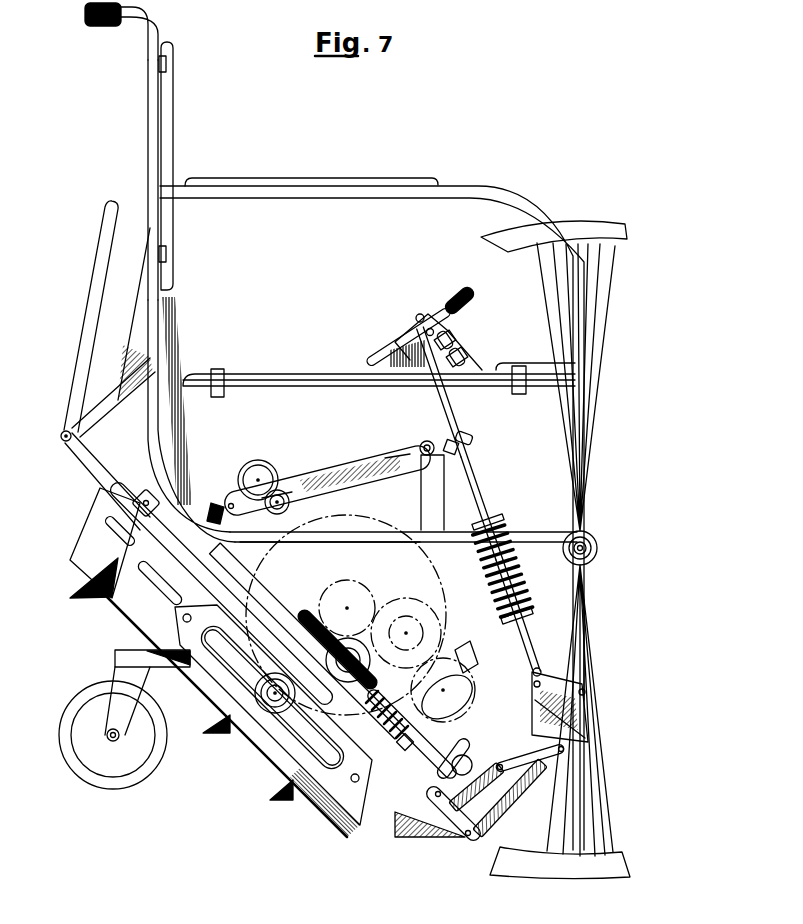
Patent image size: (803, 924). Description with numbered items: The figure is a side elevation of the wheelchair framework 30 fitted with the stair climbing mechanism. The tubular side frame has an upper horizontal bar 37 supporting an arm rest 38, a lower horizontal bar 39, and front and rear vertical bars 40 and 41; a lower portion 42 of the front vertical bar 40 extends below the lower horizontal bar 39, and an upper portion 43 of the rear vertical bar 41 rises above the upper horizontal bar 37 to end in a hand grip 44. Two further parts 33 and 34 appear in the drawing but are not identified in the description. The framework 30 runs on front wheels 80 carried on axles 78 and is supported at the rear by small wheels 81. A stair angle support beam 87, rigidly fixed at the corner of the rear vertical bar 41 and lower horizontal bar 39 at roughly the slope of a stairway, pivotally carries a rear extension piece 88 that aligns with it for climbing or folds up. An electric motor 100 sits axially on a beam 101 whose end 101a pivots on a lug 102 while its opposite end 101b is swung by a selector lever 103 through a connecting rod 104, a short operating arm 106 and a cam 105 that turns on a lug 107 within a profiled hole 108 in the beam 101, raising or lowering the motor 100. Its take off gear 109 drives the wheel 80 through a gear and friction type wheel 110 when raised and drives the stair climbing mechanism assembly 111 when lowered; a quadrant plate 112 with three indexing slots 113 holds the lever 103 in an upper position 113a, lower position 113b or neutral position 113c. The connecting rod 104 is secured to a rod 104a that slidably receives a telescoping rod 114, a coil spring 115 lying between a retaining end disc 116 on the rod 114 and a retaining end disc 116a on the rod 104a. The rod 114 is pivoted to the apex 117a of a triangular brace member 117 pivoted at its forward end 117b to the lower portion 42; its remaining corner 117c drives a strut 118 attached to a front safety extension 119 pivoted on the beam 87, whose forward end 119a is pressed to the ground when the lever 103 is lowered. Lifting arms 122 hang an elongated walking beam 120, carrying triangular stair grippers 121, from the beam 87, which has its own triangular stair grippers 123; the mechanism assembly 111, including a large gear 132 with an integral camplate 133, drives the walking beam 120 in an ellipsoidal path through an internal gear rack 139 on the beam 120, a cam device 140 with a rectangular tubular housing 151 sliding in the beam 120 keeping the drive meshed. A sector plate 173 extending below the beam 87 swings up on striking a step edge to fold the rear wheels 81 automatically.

The framework 30 is at (293, 156).
The armrest bar 33 is at (538, 368).
The backrest tube 34 is at (167, 145).
The upper horizontal bar 37 is at (460, 192).
The arm rest 38 is at (299, 181).
The lower horizontal bar 39 is at (327, 543).
The front vertical bar 40 is at (585, 451).
The rear vertical bar 41 is at (158, 191).
The lower portion 42 is at (588, 657).
The upper portion 43 is at (143, 15).
The hand grip 44 is at (106, 28).
The axle 78 is at (566, 552).
The front wheel 80 is at (570, 226).
The small wheel 81 is at (164, 747).
The stair angle support beam 87 is at (80, 447).
The rear extension piece 88 is at (106, 227).
The electric motor 100 is at (352, 458).
The beam 101 is at (258, 478).
The end of beam 101a is at (232, 503).
The opposite end of beam 101b is at (398, 456).
The lug 102 is at (213, 503).
The selector lever 103 is at (436, 310).
The connecting rod 104 is at (447, 410).
The rod 104a is at (485, 491).
The cam 105 is at (450, 447).
The short operating arm 106 is at (464, 441).
The lug 107 is at (430, 488).
The profiled hole 108 is at (422, 444).
The take off gear 109 is at (292, 491).
The gear and friction type wheel 110 is at (275, 498).
The stair climbing mechanism assembly 111 is at (442, 571).
The quadrant plate 112 is at (393, 339).
The indexing slots 113 is at (425, 321).
The upper position 113a is at (418, 316).
The lower position 113b is at (466, 367).
The center neutral position 113c is at (455, 347).
The telescoping rod 114 is at (528, 641).
The coil spring 115 is at (520, 586).
The retaining end disc 116 is at (525, 617).
The retaining end disc 116a is at (490, 521).
The triangular brace member 117 is at (545, 695).
The apex of brace member 117a is at (534, 684).
The forward end of brace member 117b is at (586, 692).
The remaining corner of brace member 117c is at (476, 841).
The strut 118 is at (543, 767).
The front safety extension 119 is at (573, 748).
The forward end of safety extension 119a is at (575, 732).
The walking beam 120 is at (78, 578).
The triangular stair grippers 121 is at (228, 735).
The lifting arms 122 is at (222, 594).
The triangular stair grippers 123 is at (400, 798).
The large gear 132 is at (452, 652).
The camplate 133 is at (456, 680).
The internal gear rack 139 is at (330, 791).
The cam device 140 is at (172, 595).
The rectangular tubular housing 151 is at (160, 598).
The sector plate 173 is at (432, 823).